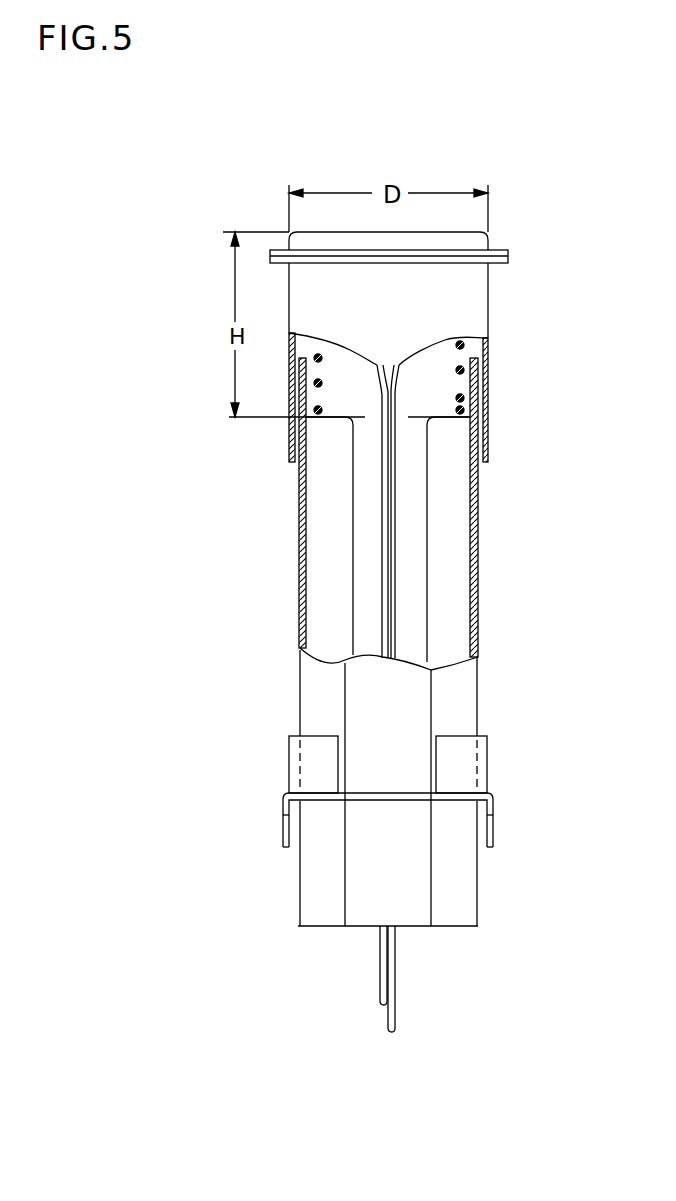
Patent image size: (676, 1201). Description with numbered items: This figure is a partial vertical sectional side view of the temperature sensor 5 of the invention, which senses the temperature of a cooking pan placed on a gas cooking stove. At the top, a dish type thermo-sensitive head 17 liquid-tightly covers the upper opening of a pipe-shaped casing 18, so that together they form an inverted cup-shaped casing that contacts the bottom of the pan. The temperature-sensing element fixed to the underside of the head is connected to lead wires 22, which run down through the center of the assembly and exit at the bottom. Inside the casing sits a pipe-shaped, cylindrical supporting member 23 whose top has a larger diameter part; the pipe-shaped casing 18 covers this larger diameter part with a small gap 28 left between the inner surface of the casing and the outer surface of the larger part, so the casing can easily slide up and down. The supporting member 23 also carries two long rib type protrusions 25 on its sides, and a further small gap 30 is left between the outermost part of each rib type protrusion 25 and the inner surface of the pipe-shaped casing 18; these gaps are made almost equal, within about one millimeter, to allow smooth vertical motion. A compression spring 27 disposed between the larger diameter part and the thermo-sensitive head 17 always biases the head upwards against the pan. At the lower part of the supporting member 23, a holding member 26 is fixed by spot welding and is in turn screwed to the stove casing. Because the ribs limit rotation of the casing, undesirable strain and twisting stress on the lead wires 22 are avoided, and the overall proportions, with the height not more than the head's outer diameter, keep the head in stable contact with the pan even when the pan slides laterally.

The temperature sensor 5 is at (478, 505).
The thermo-sensitive head 17 is at (478, 242).
The pipe-shaped casing 18 is at (483, 297).
The lead wires 22 is at (388, 583).
The supporting member 23 is at (420, 710).
The rib type protrusions 25 is at (478, 620).
The holding member 26 is at (393, 802).
The compression spring 27 is at (460, 378).
The small gap 28 is at (298, 373).
The small gap 30 is at (297, 440).